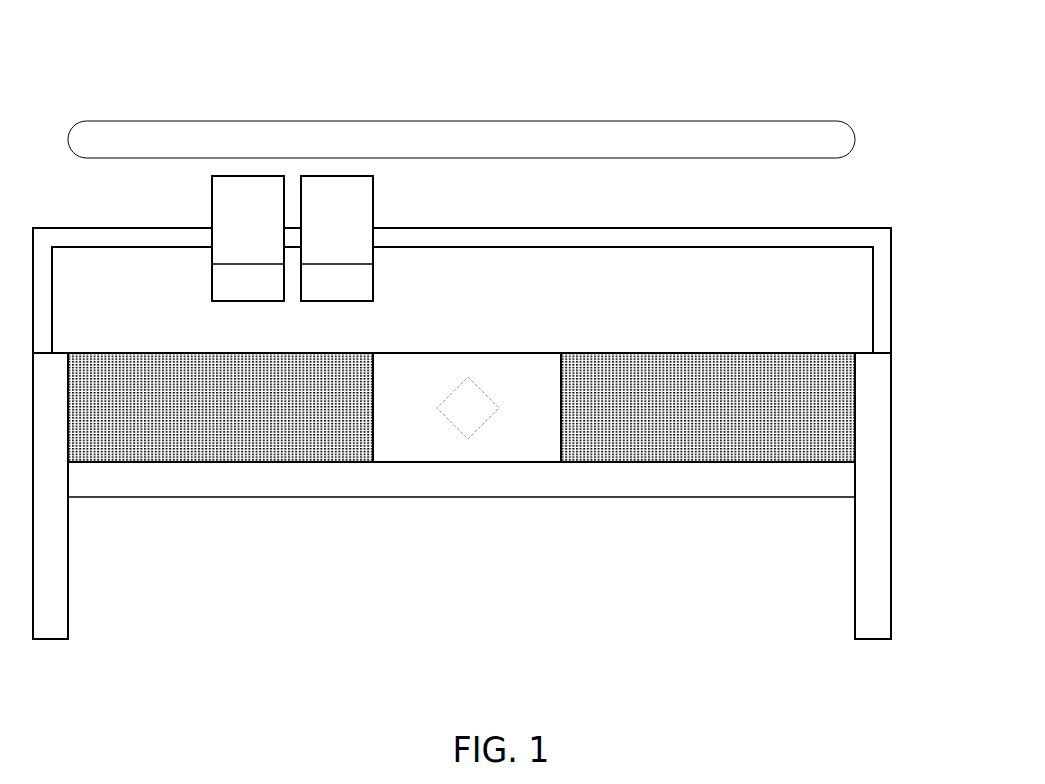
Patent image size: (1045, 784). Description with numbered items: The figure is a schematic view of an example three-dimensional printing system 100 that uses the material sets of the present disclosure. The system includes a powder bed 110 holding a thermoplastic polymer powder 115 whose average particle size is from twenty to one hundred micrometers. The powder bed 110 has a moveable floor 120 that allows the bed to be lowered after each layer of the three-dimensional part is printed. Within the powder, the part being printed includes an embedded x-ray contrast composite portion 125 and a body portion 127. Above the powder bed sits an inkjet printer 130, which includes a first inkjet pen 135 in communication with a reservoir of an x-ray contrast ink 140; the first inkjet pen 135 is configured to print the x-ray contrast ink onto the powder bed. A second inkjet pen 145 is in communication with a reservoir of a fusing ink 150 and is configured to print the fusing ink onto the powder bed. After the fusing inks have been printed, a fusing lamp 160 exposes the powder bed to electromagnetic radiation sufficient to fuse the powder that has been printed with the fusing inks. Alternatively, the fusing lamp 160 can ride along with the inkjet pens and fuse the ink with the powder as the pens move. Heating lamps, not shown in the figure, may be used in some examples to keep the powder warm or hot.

The 3-dimensional printing system 100 is at (135, 55).
The powder bed 110 is at (462, 496).
The thermoplastic polymer powder 115 is at (710, 357).
The moveable floor 120 is at (588, 480).
The embedded x-ray contrast composite portion 125 is at (468, 408).
The body portion 127 is at (503, 366).
The inkjet printer 130 is at (487, 236).
The first inkjet pen 135 is at (188, 284).
The reservoir of x-ray contrast ink 140 is at (236, 207).
The second inkjet pen 145 is at (395, 270).
The reservoir of fusing ink 150 is at (348, 202).
The fusing lamp 160 is at (550, 140).